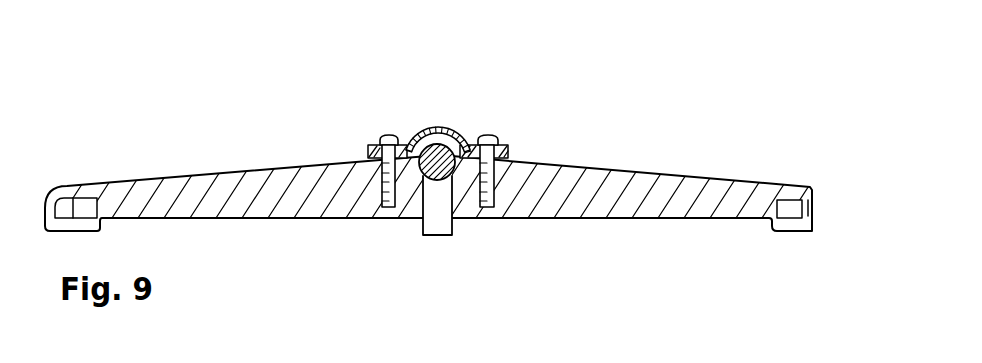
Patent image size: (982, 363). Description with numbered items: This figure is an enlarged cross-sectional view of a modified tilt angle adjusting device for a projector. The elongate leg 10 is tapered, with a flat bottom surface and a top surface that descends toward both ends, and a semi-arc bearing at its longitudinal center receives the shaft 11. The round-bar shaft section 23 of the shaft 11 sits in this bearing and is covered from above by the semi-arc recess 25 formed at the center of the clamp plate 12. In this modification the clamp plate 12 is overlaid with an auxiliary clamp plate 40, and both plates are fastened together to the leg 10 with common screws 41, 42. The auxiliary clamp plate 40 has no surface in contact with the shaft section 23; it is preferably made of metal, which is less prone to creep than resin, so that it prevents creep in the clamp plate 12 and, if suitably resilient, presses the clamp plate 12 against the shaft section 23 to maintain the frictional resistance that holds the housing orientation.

The leg 10 is at (640, 219).
The shaft 11 is at (420, 121).
The shaft section 23 is at (437, 141).
The semi-arc recess 25 is at (455, 132).
The clamp plate 12 is at (509, 152).
The auxiliary clamp plate 40 is at (477, 138).
The screw 41 is at (490, 136).
The screw 42 is at (388, 138).